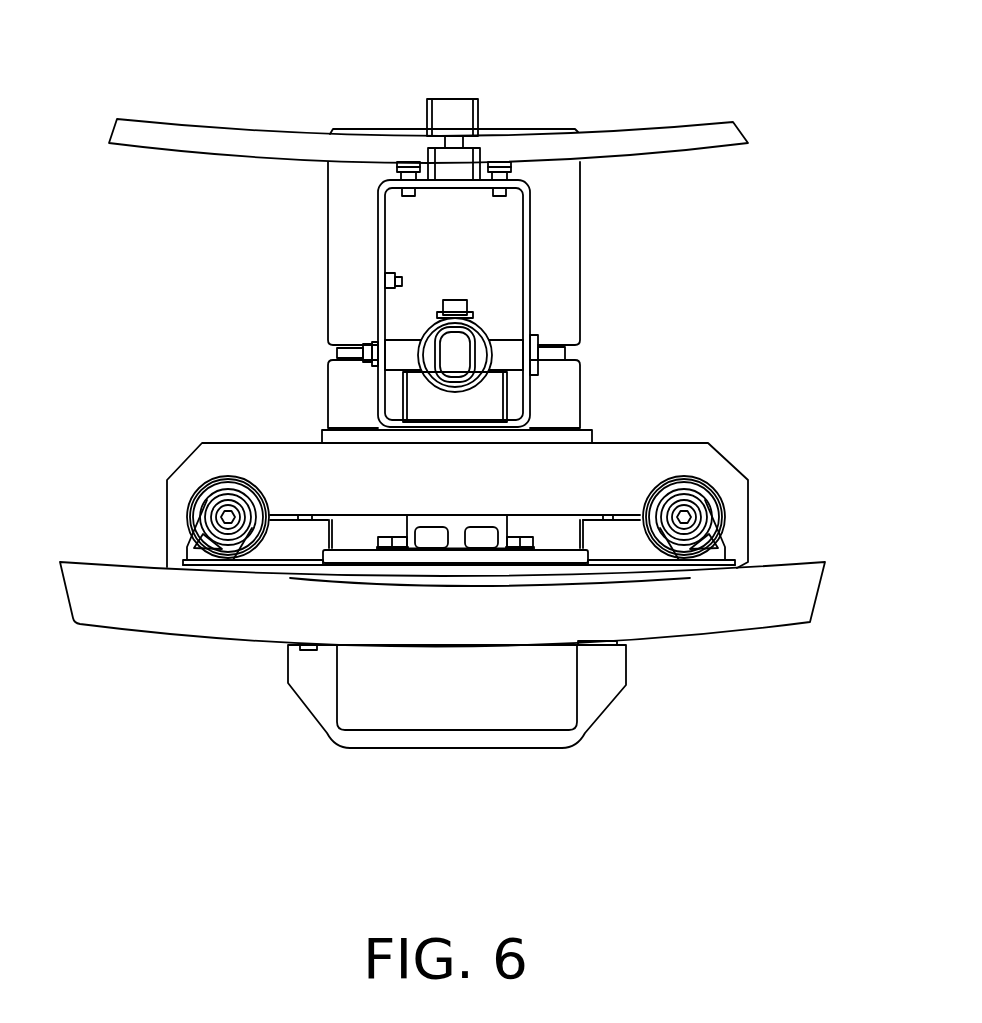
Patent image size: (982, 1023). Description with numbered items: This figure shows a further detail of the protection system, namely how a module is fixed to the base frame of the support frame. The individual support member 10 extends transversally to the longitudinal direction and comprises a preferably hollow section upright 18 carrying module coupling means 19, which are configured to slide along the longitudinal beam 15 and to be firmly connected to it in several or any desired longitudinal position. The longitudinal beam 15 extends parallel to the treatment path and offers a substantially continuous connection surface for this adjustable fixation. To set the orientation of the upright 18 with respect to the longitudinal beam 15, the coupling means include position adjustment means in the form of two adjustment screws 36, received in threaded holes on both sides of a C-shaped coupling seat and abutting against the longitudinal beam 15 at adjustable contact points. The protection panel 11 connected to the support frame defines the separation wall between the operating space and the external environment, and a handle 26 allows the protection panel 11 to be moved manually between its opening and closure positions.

The support member 10 is at (532, 260).
The protection panel 11 is at (635, 622).
The longitudinal beam 15 is at (663, 128).
The upright 18 is at (378, 262).
The module coupling means 19 is at (437, 150).
The handle 26 is at (488, 748).
The adjustment screw 36 is at (399, 162).